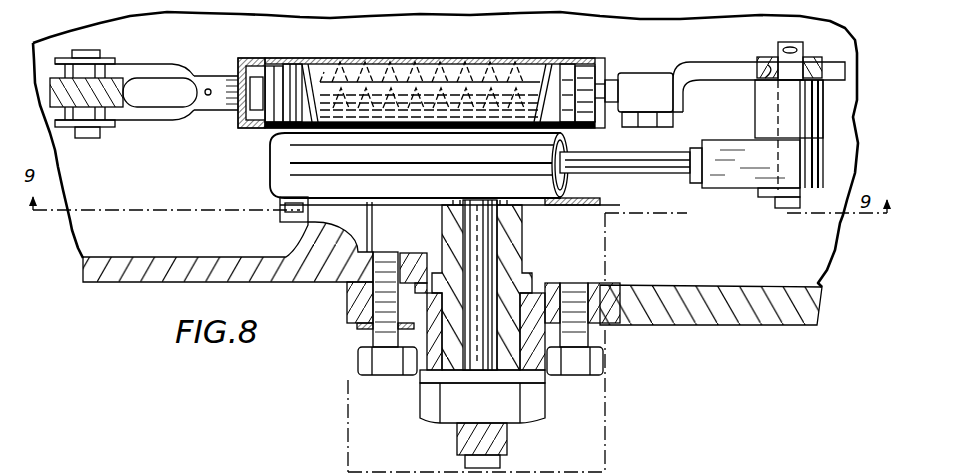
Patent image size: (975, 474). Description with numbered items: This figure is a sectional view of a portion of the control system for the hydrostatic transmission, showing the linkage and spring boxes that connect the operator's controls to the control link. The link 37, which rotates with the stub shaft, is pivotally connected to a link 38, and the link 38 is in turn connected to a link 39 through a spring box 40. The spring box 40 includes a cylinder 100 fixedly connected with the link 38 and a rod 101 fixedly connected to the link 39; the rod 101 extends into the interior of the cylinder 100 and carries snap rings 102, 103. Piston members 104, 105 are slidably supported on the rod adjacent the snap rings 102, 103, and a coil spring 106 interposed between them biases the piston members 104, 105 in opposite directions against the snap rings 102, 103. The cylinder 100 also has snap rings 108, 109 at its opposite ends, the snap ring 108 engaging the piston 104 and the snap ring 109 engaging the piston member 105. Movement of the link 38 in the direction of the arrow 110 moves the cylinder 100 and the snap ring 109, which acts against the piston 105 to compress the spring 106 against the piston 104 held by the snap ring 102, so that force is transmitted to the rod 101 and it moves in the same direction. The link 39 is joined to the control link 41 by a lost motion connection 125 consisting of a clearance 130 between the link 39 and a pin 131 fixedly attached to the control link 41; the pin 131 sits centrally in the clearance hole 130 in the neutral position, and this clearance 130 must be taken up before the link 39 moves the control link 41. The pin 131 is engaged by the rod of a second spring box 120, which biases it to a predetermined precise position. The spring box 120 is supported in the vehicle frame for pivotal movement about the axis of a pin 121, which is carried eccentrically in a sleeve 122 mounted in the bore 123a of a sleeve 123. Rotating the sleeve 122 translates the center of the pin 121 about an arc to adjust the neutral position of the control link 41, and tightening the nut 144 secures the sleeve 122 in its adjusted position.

The link 37 is at (122, 94).
The link 38 is at (220, 55).
The link 39 is at (717, 62).
The spring box 40 is at (432, 57).
The control link 41 is at (758, 108).
The cylinder 100 is at (262, 60).
The rod 101 is at (642, 172).
The snap ring 102 is at (280, 62).
The snap ring 103 is at (620, 76).
The piston member 104 is at (318, 50).
The piston member 105 is at (585, 62).
The coil spring 106 is at (353, 60).
The snap ring 108 is at (238, 124).
The snap ring 109 is at (600, 64).
The arrow 110 is at (187, 48).
The spring box 120 is at (272, 182).
The pin 121 is at (487, 223).
The sleeve 122 is at (518, 247).
The sleeve 123 is at (425, 386).
The bore 123a is at (416, 368).
The lost motion connection 125 is at (836, 57).
The clearance 130 is at (765, 78).
The pin 131 is at (780, 48).
The nut 144 is at (540, 405).